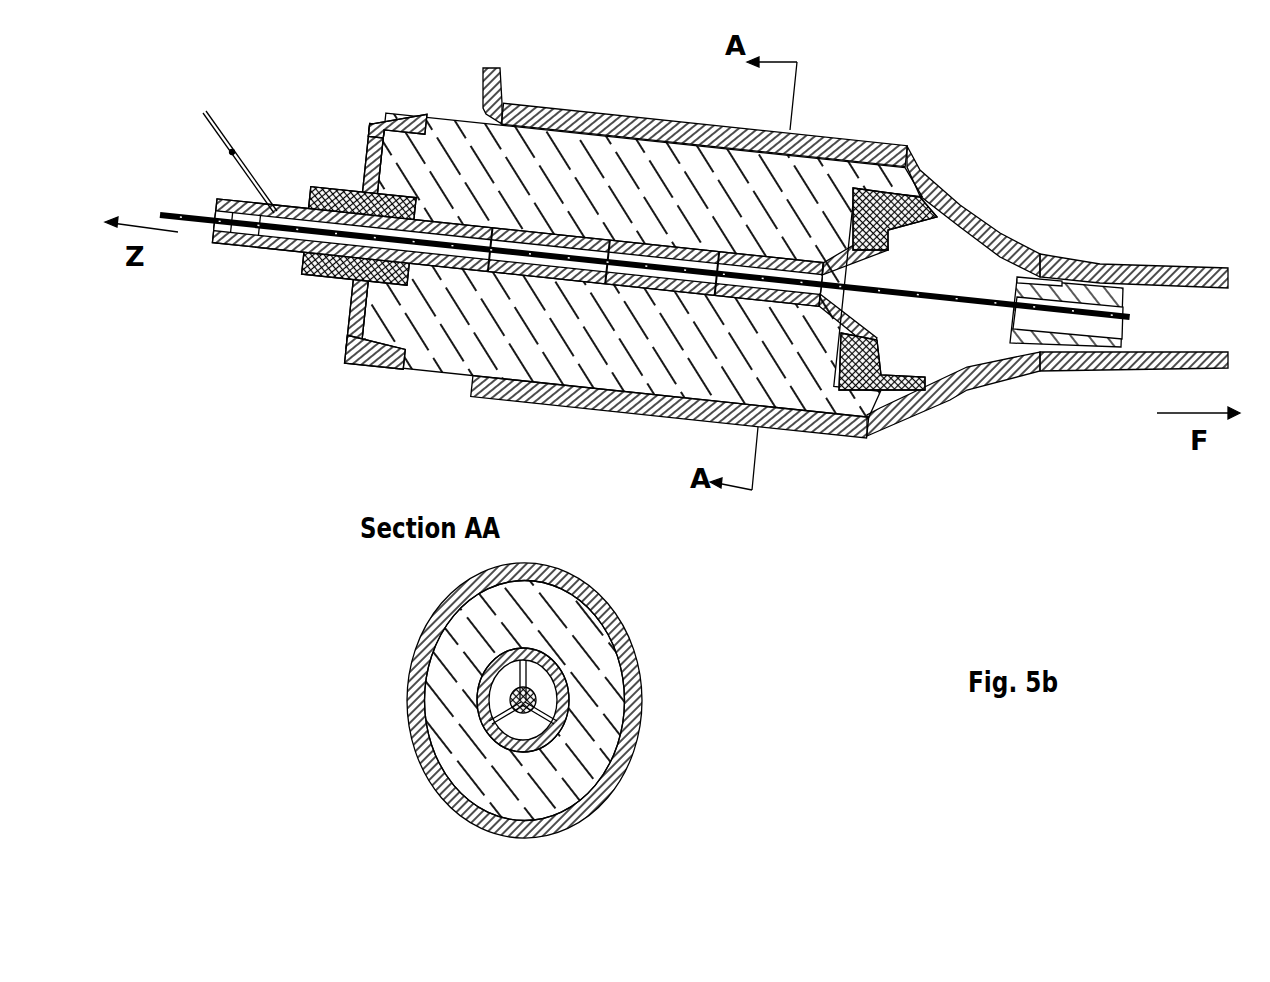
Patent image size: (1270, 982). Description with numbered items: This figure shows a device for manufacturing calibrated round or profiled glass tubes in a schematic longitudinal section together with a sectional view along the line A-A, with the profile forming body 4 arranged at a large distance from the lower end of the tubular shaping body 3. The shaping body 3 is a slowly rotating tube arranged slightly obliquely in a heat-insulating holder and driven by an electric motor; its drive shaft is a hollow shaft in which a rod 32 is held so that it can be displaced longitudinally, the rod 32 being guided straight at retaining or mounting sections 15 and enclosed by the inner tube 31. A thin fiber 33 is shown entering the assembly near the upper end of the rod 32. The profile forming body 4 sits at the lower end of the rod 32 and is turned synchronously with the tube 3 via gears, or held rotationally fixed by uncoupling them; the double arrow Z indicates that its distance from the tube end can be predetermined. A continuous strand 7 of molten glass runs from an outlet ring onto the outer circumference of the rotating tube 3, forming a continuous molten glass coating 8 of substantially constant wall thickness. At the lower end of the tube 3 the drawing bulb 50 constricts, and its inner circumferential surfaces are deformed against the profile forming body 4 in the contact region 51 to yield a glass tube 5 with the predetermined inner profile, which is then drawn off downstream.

The shaping body 3 is at (800, 178).
The profile forming body 4 is at (1035, 278).
The glass tube 5 is at (1215, 268).
The continuous strand of molten glass 7 is at (498, 78).
The continuous molten glass coating 8 is at (605, 112).
The retaining or mounting sections 15 is at (486, 252).
The inner tube 31 is at (258, 247).
The rod 32 is at (177, 212).
The fiber 33 is at (245, 165).
The drawing bulb 50 is at (955, 205).
The contact region 51 is at (1110, 268).